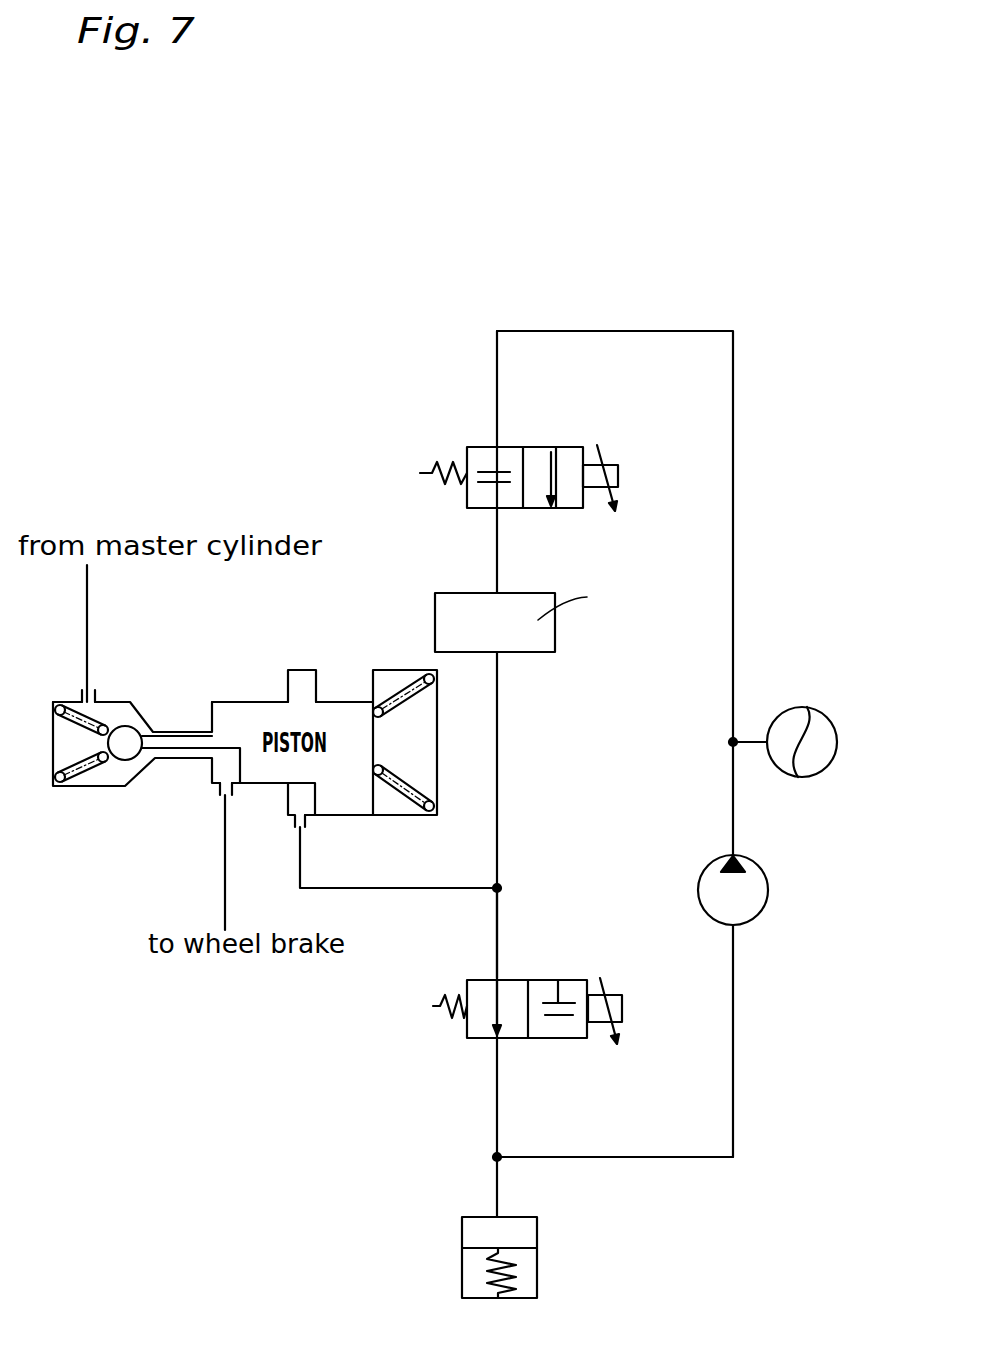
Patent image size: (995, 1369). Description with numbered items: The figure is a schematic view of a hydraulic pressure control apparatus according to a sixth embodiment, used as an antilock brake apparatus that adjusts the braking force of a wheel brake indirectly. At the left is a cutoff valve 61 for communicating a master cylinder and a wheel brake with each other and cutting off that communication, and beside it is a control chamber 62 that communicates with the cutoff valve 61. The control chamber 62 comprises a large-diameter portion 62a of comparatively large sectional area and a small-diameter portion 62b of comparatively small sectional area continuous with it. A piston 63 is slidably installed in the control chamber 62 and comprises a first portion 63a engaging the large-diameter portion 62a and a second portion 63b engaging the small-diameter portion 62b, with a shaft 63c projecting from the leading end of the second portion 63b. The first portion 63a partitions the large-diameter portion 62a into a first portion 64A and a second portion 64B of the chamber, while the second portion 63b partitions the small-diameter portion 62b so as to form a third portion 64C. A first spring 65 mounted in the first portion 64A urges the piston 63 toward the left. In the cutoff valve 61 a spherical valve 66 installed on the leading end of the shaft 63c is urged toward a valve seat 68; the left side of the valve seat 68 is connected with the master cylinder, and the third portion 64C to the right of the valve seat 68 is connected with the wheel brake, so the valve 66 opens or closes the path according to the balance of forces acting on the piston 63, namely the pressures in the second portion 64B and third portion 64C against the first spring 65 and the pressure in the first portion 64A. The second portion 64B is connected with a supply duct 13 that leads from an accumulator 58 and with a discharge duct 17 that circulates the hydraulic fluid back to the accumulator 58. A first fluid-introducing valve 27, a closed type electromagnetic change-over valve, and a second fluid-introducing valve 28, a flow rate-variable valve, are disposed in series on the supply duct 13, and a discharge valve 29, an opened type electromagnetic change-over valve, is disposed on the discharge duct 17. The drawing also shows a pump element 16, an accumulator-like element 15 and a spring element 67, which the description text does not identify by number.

The supply duct 13 is at (634, 331).
The accumulator 15 is at (480, 1299).
The pump 16 is at (752, 920).
The discharge duct 17 is at (497, 930).
The first fluid-introducing valve 27 is at (537, 447).
The second fluid-introducing valve 28 is at (460, 592).
The discharge valve 29 is at (547, 980).
The accumulator 58 is at (822, 778).
The cutoff valve 61 is at (108, 788).
The control chamber 62 is at (383, 678).
The large-diameter portion 62a is at (305, 675).
The small-diameter portion 62b is at (238, 712).
The piston 63 is at (342, 665).
The first portion of the piston 63a is at (353, 808).
The second portion of the piston 63b is at (258, 768).
The shaft 63c is at (183, 750).
The first portion of the control chamber 64A is at (428, 722).
The second portion of the control chamber 64B is at (308, 803).
The third portion of the control chamber 64C is at (222, 763).
The first spring 65 is at (430, 772).
The spherical valve 66 is at (127, 727).
The spring 67 is at (88, 770).
The valve seat 68 is at (150, 720).